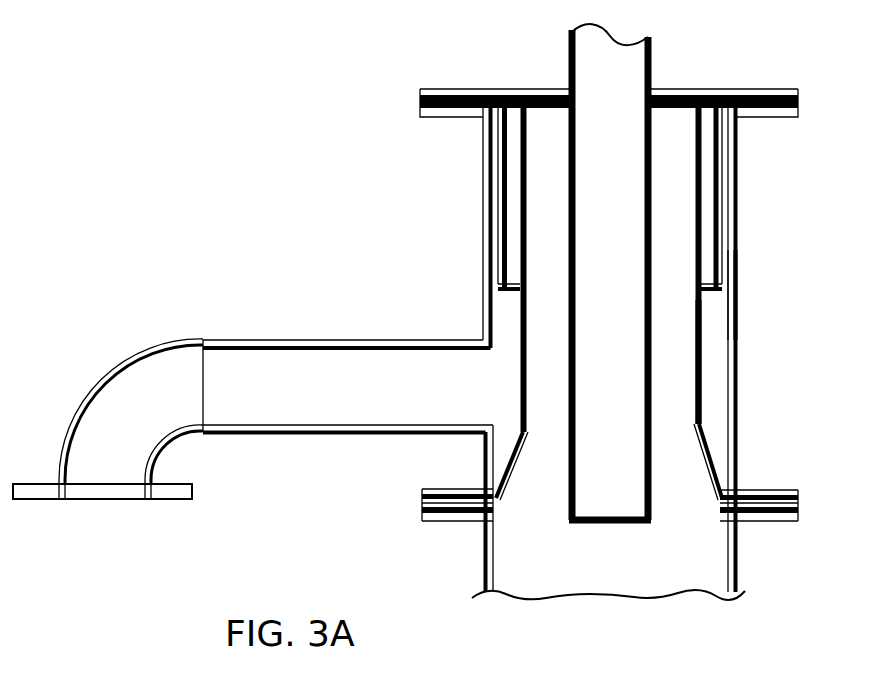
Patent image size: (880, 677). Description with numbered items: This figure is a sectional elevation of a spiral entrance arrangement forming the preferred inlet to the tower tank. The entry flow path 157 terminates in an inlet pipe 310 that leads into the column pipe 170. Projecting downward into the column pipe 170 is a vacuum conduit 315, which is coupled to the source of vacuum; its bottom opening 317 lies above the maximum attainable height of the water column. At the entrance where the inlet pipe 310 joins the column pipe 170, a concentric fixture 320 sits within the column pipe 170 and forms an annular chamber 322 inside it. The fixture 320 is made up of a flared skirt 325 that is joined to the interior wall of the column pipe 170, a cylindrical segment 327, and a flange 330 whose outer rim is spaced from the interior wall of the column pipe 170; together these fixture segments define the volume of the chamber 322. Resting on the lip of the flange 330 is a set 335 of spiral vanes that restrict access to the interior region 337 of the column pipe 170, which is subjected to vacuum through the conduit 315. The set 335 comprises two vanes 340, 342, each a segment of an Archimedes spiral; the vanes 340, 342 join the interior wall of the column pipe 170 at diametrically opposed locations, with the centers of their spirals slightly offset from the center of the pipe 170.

The entry flow path 157 is at (253, 394).
The column pipe 170 is at (738, 401).
The inlet pipe 310 is at (283, 340).
The vacuum conduit 315 is at (652, 53).
The bottom opening 317 is at (608, 522).
The concentric fixture 320 is at (513, 382).
The annular chamber 322 is at (714, 441).
The flared skirt 325 is at (713, 482).
The cylindrical segment 327 is at (704, 362).
The flange 330 is at (712, 300).
The set of spiral vanes 335 is at (708, 200).
The interior region 337 is at (512, 563).
The vane 340 is at (497, 151).
The vane 342 is at (515, 204).